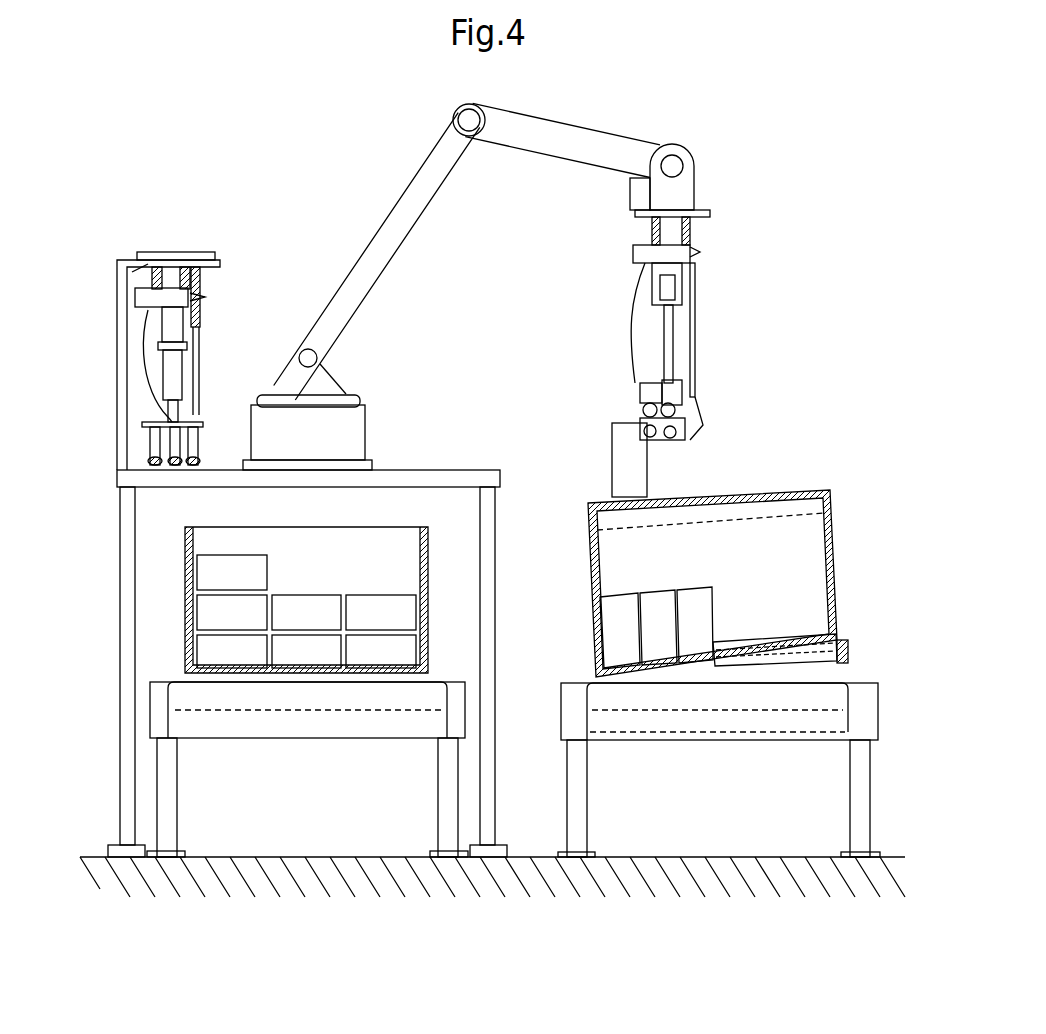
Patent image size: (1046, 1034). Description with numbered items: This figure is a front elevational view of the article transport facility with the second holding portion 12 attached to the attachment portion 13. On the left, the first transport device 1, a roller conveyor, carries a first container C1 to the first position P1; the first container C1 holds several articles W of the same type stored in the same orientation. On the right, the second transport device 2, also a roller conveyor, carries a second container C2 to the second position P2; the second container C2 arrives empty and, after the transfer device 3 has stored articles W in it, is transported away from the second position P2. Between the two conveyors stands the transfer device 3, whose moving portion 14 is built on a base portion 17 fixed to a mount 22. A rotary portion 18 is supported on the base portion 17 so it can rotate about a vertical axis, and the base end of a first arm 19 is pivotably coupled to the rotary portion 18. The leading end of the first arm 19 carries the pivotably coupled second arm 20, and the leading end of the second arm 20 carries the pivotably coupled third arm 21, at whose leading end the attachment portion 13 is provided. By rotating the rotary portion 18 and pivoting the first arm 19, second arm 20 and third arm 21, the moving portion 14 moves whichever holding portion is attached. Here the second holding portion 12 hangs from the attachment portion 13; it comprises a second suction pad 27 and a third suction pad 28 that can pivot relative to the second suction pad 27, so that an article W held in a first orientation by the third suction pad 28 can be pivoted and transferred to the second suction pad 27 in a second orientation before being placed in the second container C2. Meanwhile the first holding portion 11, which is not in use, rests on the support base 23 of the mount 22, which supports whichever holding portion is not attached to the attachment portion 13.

The first transport device 1 is at (150, 705).
The second transport device 2 is at (893, 712).
The transfer device 3 is at (517, 262).
The first holding portion 11 is at (172, 375).
The second holding portion 12 is at (676, 341).
The attachment portion 13 is at (715, 212).
The moving portion 14 is at (467, 251).
The base portion 17 is at (360, 430).
The rotary portion 18 is at (344, 394).
The first arm 19 is at (385, 225).
The second arm 20 is at (572, 145).
The third arm 21 is at (697, 185).
The mount 22 is at (440, 470).
The support base 23 is at (178, 301).
The second suction pad 27 is at (623, 412).
The third suction pad 28 is at (680, 450).
The first container C1 is at (190, 580).
The second container C2 is at (835, 550).
The first position P1 is at (115, 563).
The second position P2 is at (893, 591).
The article W is at (387, 612).